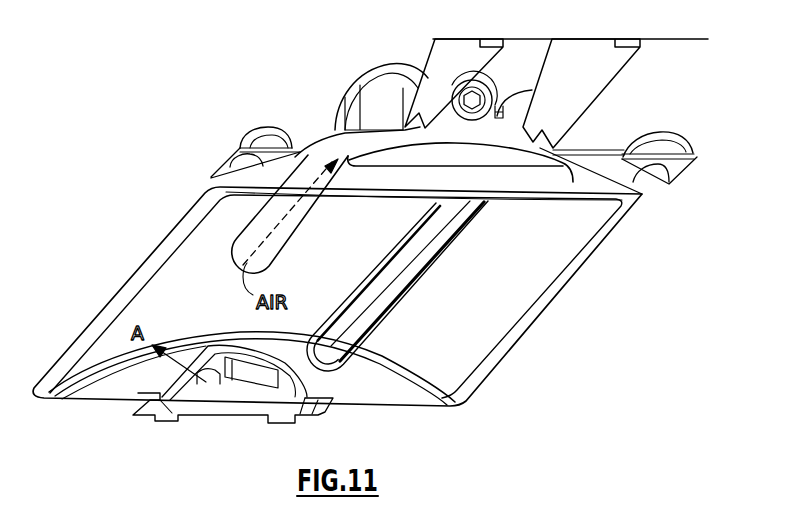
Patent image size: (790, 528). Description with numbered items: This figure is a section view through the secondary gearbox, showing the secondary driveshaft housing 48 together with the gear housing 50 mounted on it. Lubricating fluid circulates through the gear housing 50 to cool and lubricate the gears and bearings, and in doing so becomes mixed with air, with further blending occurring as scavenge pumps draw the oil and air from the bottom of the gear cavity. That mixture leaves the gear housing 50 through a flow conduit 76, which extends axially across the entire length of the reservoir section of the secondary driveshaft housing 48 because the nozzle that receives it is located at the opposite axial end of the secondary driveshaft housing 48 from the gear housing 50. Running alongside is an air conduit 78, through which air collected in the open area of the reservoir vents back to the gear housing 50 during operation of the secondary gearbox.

The secondary driveshaft housing 48 is at (103, 404).
The gear housing 50 is at (581, 147).
The flow conduit 76 is at (401, 281).
The air conduit 78 is at (287, 227).